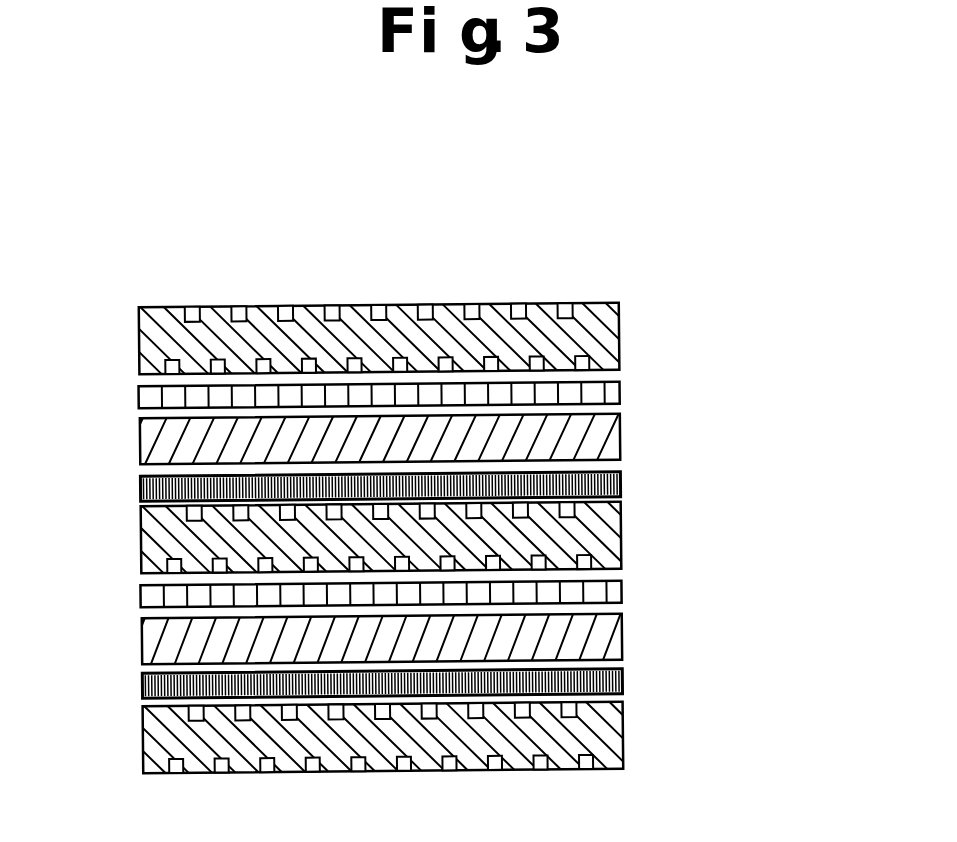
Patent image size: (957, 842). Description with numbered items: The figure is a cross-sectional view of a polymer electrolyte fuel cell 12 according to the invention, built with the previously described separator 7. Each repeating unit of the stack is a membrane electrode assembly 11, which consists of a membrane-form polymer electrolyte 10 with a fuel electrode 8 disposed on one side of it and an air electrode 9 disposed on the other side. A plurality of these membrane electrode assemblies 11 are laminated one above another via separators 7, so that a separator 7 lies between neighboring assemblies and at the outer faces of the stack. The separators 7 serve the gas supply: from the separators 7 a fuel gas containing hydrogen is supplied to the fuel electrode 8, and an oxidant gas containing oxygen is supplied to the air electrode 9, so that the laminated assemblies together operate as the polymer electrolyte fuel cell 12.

The separator 7 is at (600, 347).
The fuel electrode 8 is at (575, 393).
The air electrode 9 is at (573, 480).
The membrane-form polymer electrolyte 10 is at (621, 435).
The membrane electrode assembly 11 is at (128, 387).
The polymer electrolyte fuel cell 12 is at (368, 282).